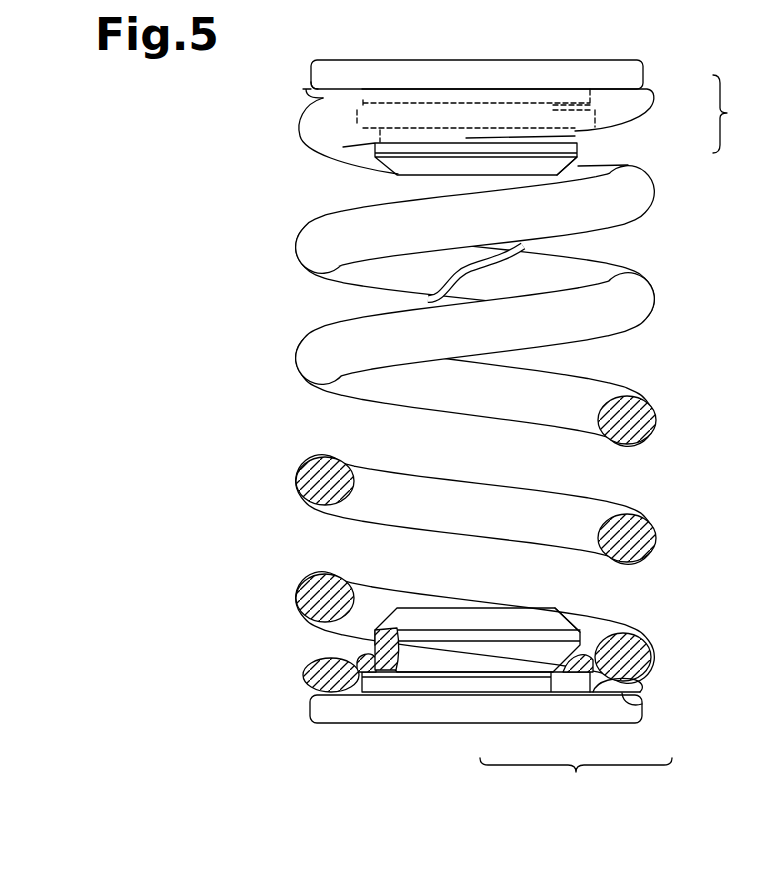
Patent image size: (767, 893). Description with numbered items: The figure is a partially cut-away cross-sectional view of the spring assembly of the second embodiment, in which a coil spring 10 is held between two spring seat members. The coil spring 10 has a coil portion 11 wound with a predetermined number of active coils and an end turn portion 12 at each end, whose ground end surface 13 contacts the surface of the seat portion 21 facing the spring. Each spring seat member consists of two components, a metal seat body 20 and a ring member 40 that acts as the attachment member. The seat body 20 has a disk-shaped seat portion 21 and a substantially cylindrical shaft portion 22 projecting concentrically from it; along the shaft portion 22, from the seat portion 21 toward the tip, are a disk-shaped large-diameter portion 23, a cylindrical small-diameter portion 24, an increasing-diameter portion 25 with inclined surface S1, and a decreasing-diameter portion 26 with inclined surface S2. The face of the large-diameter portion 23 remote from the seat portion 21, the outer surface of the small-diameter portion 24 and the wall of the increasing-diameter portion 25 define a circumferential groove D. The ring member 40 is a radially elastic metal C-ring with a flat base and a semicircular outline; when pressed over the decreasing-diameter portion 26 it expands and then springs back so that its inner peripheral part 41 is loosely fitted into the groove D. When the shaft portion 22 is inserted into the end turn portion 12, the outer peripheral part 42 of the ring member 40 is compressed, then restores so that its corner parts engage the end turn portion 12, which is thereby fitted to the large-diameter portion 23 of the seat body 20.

The coil spring 10 is at (658, 273).
The coil portion 11 is at (598, 388).
The end turn portion 12 is at (310, 98).
The ground end surface 13 is at (328, 88).
The seat body 20 is at (509, 407).
The seat portion 21 is at (604, 68).
The shaft portion 22 is at (408, 170).
The large-diameter portion 23 is at (648, 93).
The small-diameter portion 24 is at (652, 105).
The increasing-diameter portion 25 is at (580, 133).
The decreasing-diameter portion 26 is at (578, 160).
The ring member 40 is at (337, 133).
The inner peripheral part 41 is at (378, 632).
The outer peripheral part 42 is at (357, 114).
The groove D is at (615, 439).